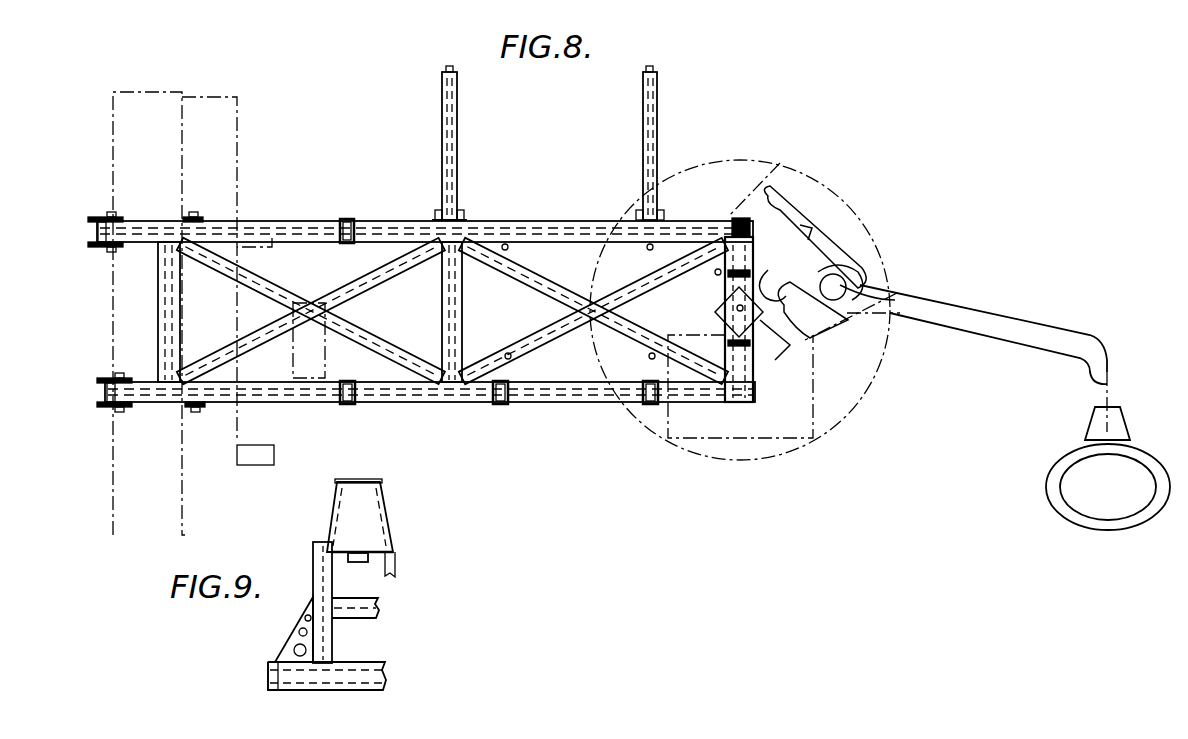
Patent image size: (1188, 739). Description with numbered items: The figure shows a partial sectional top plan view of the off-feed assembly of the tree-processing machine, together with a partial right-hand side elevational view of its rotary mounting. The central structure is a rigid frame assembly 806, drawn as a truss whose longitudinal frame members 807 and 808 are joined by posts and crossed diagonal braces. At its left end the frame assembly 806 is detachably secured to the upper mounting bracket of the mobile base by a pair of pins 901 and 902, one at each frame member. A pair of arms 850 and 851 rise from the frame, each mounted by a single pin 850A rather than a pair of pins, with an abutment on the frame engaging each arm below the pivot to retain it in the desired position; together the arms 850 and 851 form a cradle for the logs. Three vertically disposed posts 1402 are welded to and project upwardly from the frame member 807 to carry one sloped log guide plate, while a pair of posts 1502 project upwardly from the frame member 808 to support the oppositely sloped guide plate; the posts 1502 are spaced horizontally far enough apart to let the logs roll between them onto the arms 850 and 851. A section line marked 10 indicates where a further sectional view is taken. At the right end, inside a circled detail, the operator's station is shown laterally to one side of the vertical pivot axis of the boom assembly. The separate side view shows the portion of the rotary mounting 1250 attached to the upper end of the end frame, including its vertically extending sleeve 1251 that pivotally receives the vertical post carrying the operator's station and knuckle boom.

In FIG. 8, the section line 10- 10 is at (530, 68).
In FIG. 8, the rigid frame assembly 806 is at (273, 224).
In FIG. 8, the frame member 807 is at (597, 396).
In FIG. 8, the frame member 808 is at (568, 225).
In FIG. 8, the arm 850 is at (457, 130).
In FIG. 8, the single pin 850A is at (460, 216).
In FIG. 8, the arm 851 is at (657, 110).
In FIG. 8, the pin 901 is at (112, 217).
In FIG. 8, the pin 902 is at (110, 378).
In FIG. 8, the vertically disposed posts 1402 is at (500, 404).
In FIG. 8, the posts 1502 is at (350, 219).
In FIG. 9, the rotary mounting 1250 is at (363, 523).
In FIG. 9, the vertically extending sleeve 1251 is at (364, 562).